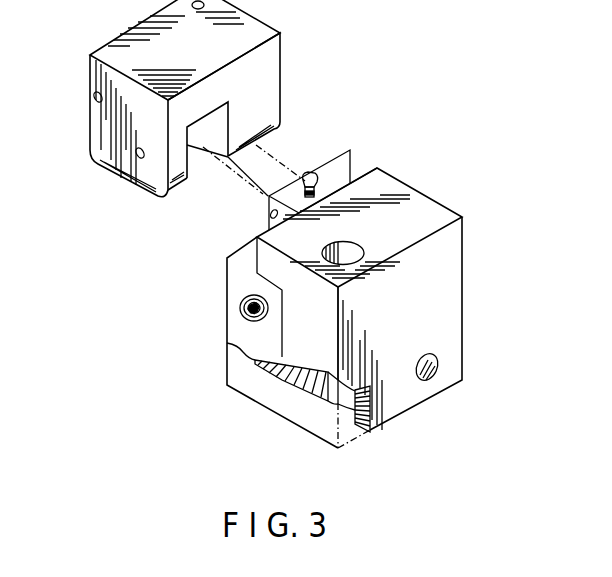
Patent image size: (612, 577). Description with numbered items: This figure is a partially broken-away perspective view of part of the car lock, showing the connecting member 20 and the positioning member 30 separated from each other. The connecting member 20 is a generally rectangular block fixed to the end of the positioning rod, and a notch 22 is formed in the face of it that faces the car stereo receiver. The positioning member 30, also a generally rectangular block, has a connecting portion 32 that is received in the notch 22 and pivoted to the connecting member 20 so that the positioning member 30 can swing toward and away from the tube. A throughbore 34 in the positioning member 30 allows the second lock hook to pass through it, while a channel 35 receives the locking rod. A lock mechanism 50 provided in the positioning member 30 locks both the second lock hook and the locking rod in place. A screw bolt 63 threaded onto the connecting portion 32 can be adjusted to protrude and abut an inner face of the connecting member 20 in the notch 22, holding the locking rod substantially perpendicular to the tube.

The connecting member 20 is at (281, 77).
The notch 22 is at (210, 128).
The positioning member 30 is at (462, 298).
The connecting portion 32 is at (327, 188).
The throughbore 34 is at (430, 387).
The channel 35 is at (348, 255).
The lock mechanism 50 is at (239, 302).
The screw bolt 63 is at (315, 172).